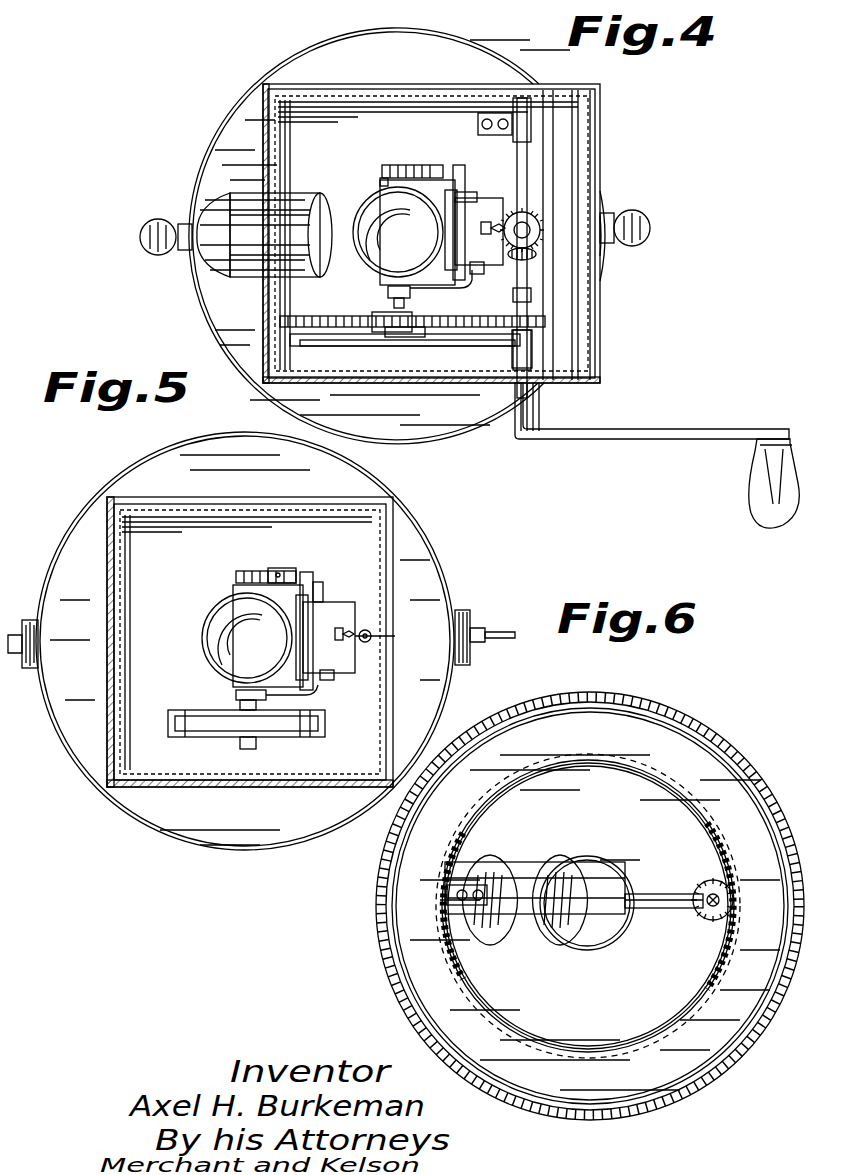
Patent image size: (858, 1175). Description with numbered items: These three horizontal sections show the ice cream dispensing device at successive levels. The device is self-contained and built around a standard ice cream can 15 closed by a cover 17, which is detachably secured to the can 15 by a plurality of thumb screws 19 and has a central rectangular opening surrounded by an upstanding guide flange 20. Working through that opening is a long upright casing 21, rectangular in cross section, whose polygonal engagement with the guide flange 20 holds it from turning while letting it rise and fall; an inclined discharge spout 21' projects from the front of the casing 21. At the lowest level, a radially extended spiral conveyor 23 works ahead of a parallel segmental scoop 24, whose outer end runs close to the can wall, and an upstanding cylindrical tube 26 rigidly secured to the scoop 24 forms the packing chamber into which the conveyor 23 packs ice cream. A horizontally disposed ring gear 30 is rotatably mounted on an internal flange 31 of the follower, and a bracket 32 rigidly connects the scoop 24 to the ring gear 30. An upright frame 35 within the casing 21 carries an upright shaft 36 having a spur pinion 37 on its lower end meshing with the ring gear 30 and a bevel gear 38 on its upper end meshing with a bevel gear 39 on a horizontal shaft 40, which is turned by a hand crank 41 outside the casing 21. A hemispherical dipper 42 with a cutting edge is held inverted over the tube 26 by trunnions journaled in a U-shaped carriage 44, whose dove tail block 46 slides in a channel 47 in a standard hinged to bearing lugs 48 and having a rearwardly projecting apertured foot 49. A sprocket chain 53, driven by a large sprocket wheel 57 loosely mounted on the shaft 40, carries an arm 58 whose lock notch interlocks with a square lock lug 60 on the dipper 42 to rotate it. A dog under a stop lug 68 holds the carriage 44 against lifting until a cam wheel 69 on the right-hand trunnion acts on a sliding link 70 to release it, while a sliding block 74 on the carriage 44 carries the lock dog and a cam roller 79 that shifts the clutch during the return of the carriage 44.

In FIG. 6, the ice cream can 15 is at (668, 710).
In FIG. 4, the cover 17 is at (430, 410).
In FIG. 5, the cover 17 is at (420, 580).
In FIG. 4, the thumb screws 19 is at (152, 255).
In FIG. 5, the thumb screws 19 is at (25, 620).
In FIG. 5, the guide flange 20 is at (390, 520).
In FIG. 4, the casing 21 is at (431, 217).
In FIG. 4, the discharge spout 21' is at (252, 235).
In FIG. 6, the spiral conveyor 23 is at (590, 928).
In FIG. 6, the scoop 24 is at (570, 866).
In FIG. 6, the tube 26 is at (660, 842).
In FIG. 6, the ring gear 30 is at (710, 834).
In FIG. 6, the internal flange 31 is at (690, 732).
In FIG. 6, the bracket 32 is at (470, 885).
In FIG. 4, the frame 35 is at (532, 345).
In FIG. 5, the upright shaft 36 is at (392, 636).
In FIG. 6, the upright shaft 36 is at (716, 908).
In FIG. 6, the spur pinion 37 is at (707, 905).
In FIG. 4, the bevel gear 38 is at (542, 230).
In FIG. 4, the bevel gear 39 is at (532, 258).
In FIG. 4, the horizontal shaft 40 is at (530, 155).
In FIG. 4, the hand crank 41 is at (610, 418).
In FIG. 4, the dipper 42 is at (372, 262).
In FIG. 5, the dipper 42 is at (210, 645).
In FIG. 4, the carriage 44 is at (500, 140).
In FIG. 4, the dove tail block 46 is at (528, 195).
In FIG. 5, the dove tail block 46 is at (335, 635).
In FIG. 4, the channel 47 is at (460, 230).
In FIG. 5, the channel 47 is at (310, 643).
In FIG. 4, the bearing lugs 48 is at (470, 192).
In FIG. 4, the foot 49 is at (418, 232).
In FIG. 5, the foot 49 is at (338, 608).
In FIG. 4, the sprocket chain 53 is at (420, 330).
In FIG. 4, the large sprocket wheel 57 is at (545, 322).
In FIG. 4, the arm 58 is at (365, 328).
In FIG. 4, the lock lug 60 is at (404, 302).
In FIG. 5, the lock lug 60 is at (248, 712).
In FIG. 5, the stop lug 68 is at (318, 582).
In FIG. 4, the cam wheel 69 is at (392, 165).
In FIG. 5, the cam wheel 69 is at (248, 571).
In FIG. 4, the sliding link 70 is at (455, 168).
In FIG. 5, the sliding link 70 is at (305, 572).
In FIG. 4, the block 74 is at (388, 292).
In FIG. 5, the block 74 is at (305, 698).
In FIG. 4, the cam roller 79 is at (484, 270).
In FIG. 5, the cam roller 79 is at (334, 678).